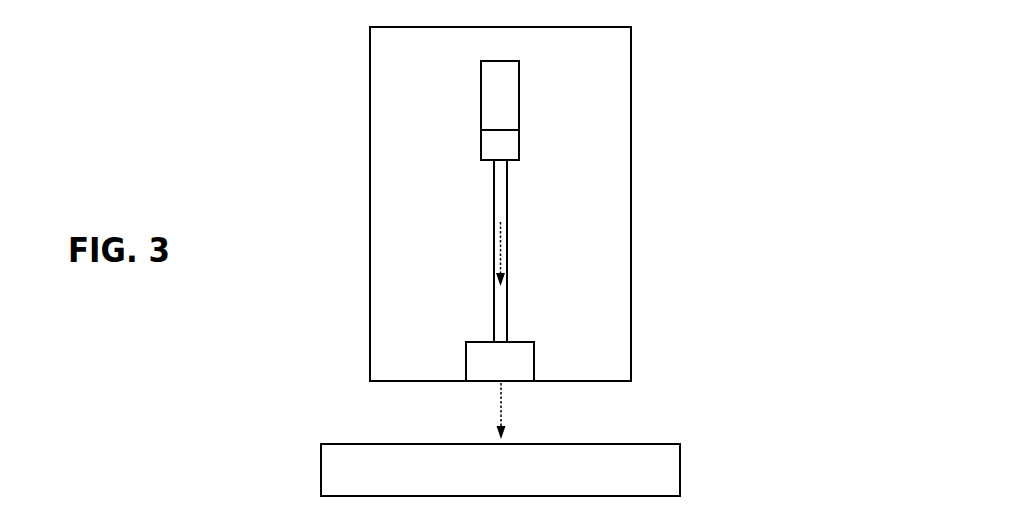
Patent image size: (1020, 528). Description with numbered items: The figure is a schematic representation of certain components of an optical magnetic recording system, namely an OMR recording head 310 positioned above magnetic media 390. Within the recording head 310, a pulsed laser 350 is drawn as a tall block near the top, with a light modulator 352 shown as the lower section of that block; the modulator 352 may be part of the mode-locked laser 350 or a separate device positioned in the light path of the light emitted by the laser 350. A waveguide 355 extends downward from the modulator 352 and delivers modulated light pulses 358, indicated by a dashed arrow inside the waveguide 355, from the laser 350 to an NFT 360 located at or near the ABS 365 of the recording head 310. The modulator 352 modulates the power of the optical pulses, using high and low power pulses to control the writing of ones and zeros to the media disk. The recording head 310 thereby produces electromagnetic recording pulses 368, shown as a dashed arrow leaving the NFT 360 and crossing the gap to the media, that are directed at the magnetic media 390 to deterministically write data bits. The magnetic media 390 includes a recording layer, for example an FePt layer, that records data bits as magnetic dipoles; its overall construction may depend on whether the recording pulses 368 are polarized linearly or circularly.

The OMR recording head 310 is at (266, 128).
The pulsed laser 350 is at (515, 95).
The light modulator 352 is at (486, 142).
The waveguide 355 is at (504, 207).
The modulated light pulses 358 is at (500, 246).
The NFT 360 is at (512, 365).
The ABS 365 is at (408, 381).
The recording pulses 368 is at (501, 411).
The magnetic media 390 is at (672, 473).